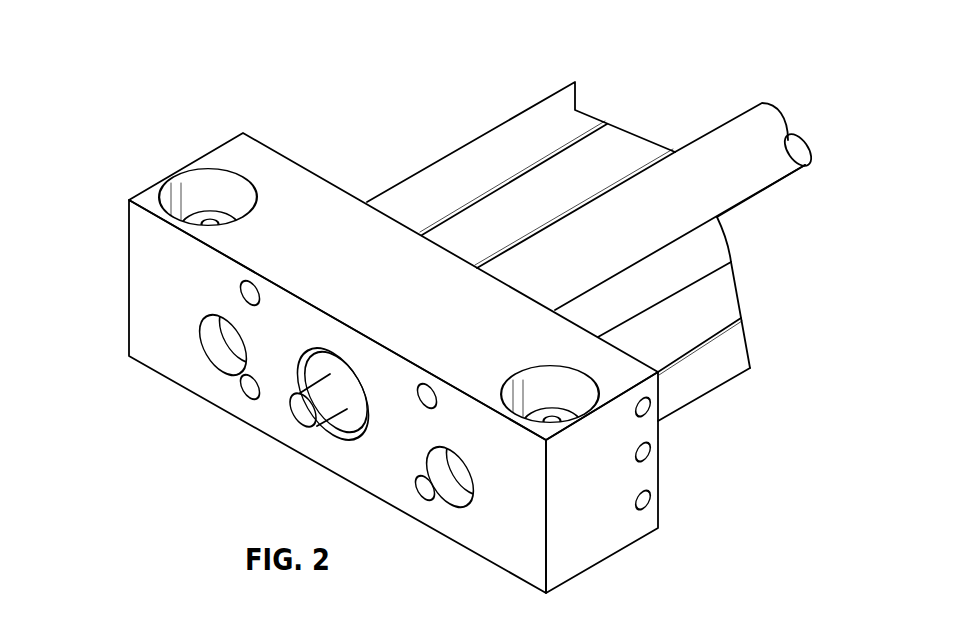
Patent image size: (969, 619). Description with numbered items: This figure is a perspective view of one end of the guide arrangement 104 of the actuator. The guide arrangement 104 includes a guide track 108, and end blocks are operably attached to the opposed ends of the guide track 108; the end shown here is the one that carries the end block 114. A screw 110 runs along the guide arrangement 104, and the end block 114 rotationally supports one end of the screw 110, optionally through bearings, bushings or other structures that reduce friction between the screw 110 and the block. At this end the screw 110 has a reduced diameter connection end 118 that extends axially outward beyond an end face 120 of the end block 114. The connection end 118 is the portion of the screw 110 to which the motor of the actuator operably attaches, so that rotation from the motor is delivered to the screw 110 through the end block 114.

The guide arrangement 104 is at (173, 68).
The guide track 108 is at (487, 147).
The screw 110 is at (738, 135).
The end block 114 is at (238, 158).
The connection end 118 is at (327, 405).
The end face 120 is at (172, 352).